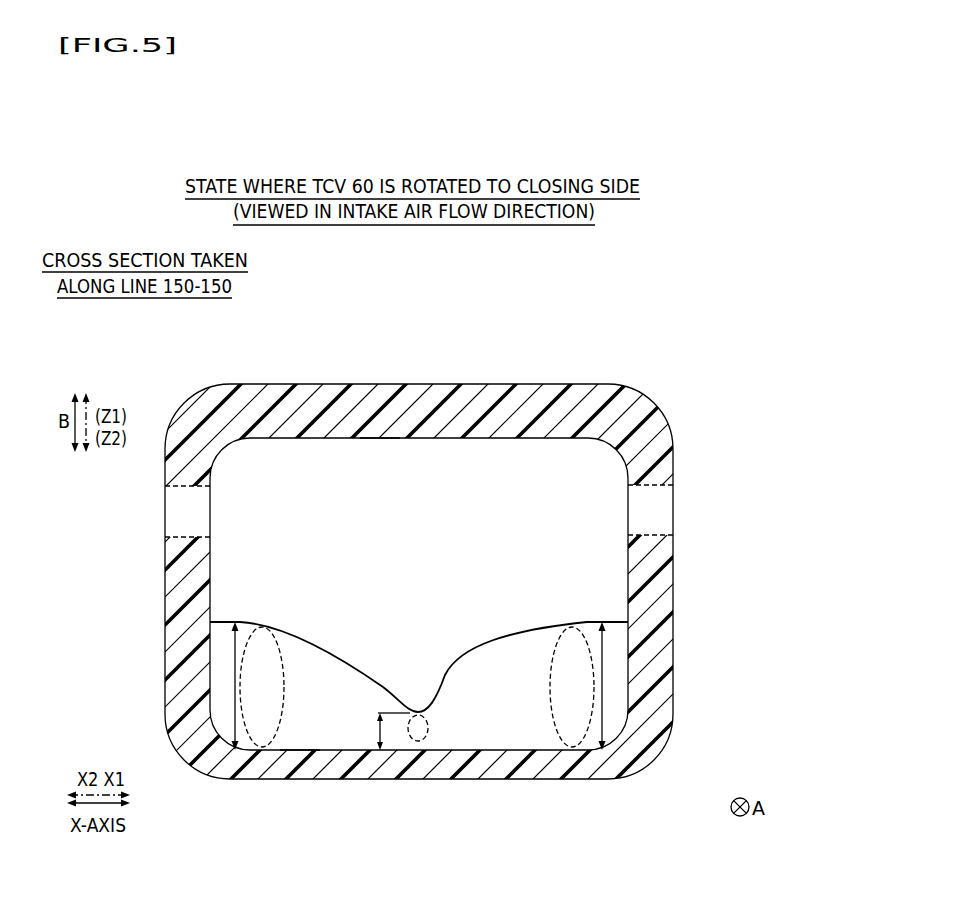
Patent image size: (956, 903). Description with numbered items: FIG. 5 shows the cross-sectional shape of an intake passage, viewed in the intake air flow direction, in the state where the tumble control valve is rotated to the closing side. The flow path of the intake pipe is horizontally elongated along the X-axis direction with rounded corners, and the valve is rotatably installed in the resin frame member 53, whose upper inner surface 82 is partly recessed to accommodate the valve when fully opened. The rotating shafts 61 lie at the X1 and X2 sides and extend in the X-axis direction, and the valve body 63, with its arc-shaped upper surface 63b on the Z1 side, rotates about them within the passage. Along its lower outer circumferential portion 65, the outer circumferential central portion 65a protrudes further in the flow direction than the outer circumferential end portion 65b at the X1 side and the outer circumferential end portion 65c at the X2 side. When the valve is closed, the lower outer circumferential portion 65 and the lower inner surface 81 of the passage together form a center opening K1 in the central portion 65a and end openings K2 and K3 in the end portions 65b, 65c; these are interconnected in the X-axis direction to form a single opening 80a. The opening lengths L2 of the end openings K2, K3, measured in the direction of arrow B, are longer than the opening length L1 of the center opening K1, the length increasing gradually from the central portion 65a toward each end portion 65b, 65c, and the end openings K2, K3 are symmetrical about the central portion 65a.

The frame member 53 is at (250, 400).
The valve body 63 is at (572, 487).
The upper surface 63b is at (477, 463).
The upper inner surface 82 is at (384, 440).
The rotating shaft 61 is at (173, 497).
The single opening 80a is at (335, 665).
The lower outer circumferential portion 65 is at (558, 538).
The outer circumferential central portion 65a is at (422, 706).
The outer circumferential end portion 65b is at (612, 620).
The outer circumferential end portion 65c is at (240, 621).
The lower inner surface 81 is at (297, 745).
The center opening K1 is at (430, 731).
The end opening K2 is at (593, 740).
The end opening K3 is at (242, 740).
The opening length L1 is at (378, 728).
The opening length L2 is at (757, 656).